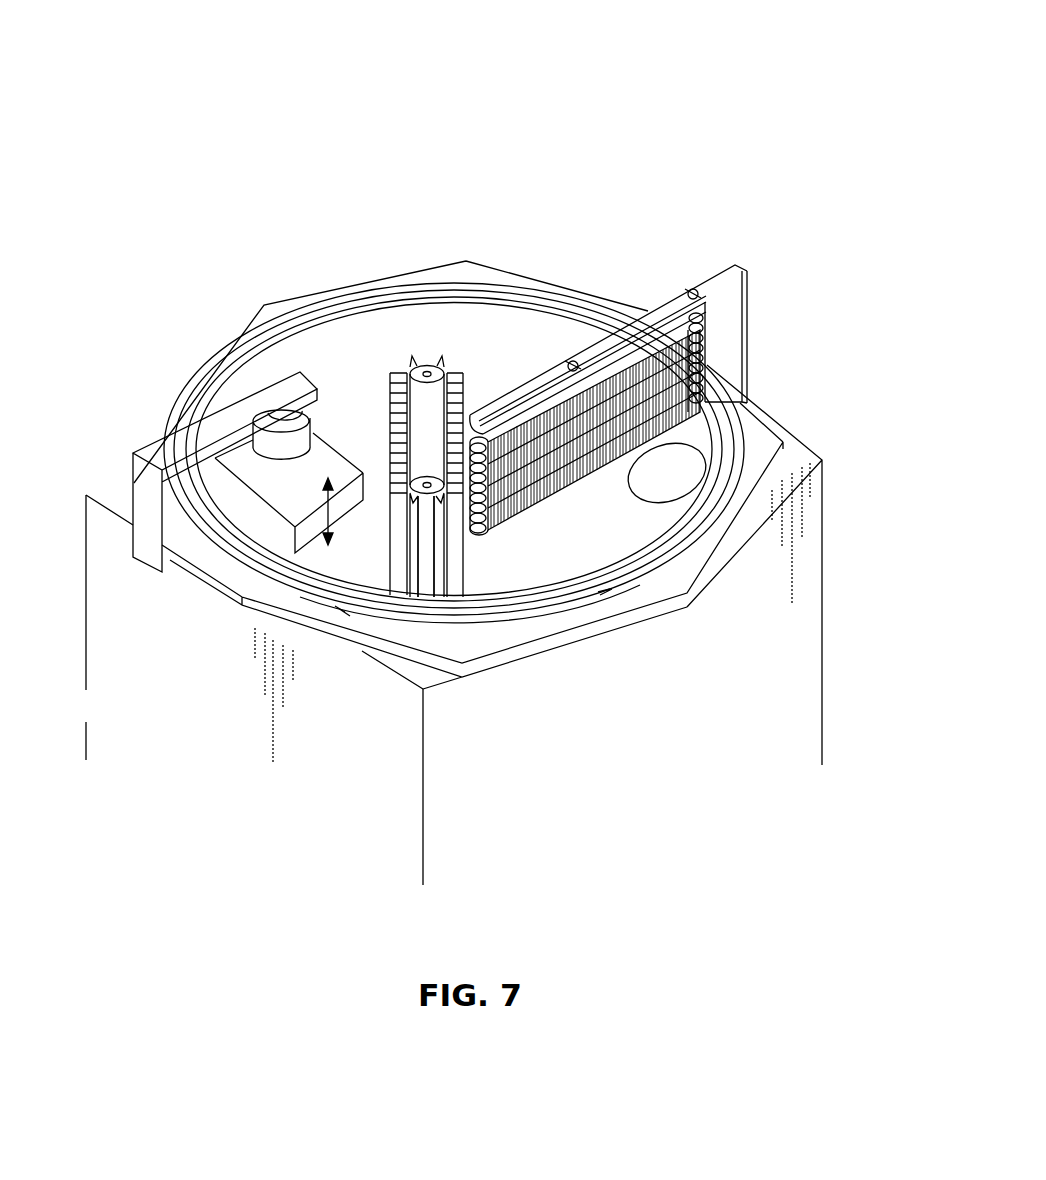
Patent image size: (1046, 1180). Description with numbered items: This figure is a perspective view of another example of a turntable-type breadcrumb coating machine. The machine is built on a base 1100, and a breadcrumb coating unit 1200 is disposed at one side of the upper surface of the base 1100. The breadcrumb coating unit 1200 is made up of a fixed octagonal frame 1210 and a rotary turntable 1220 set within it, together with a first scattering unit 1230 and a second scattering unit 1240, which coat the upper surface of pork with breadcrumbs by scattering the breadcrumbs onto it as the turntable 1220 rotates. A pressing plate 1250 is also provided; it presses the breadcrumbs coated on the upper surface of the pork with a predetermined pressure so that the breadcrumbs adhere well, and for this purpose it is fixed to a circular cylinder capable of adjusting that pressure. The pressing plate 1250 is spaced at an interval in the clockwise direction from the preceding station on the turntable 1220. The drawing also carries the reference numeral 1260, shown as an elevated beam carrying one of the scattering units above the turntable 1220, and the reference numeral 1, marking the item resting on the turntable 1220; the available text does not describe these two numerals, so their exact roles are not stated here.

The breadcrumb coating unit 1200 is at (262, 130).
The base 1100 is at (799, 700).
The octagonal frame 1210 is at (267, 314).
The turntable 1220 is at (412, 333).
The first scattering unit 1230 is at (428, 570).
The second scattering unit 1240 is at (527, 490).
The pressing plate 1250 is at (252, 516).
The support beam 1260 is at (724, 280).
The substrate 1 is at (687, 473).